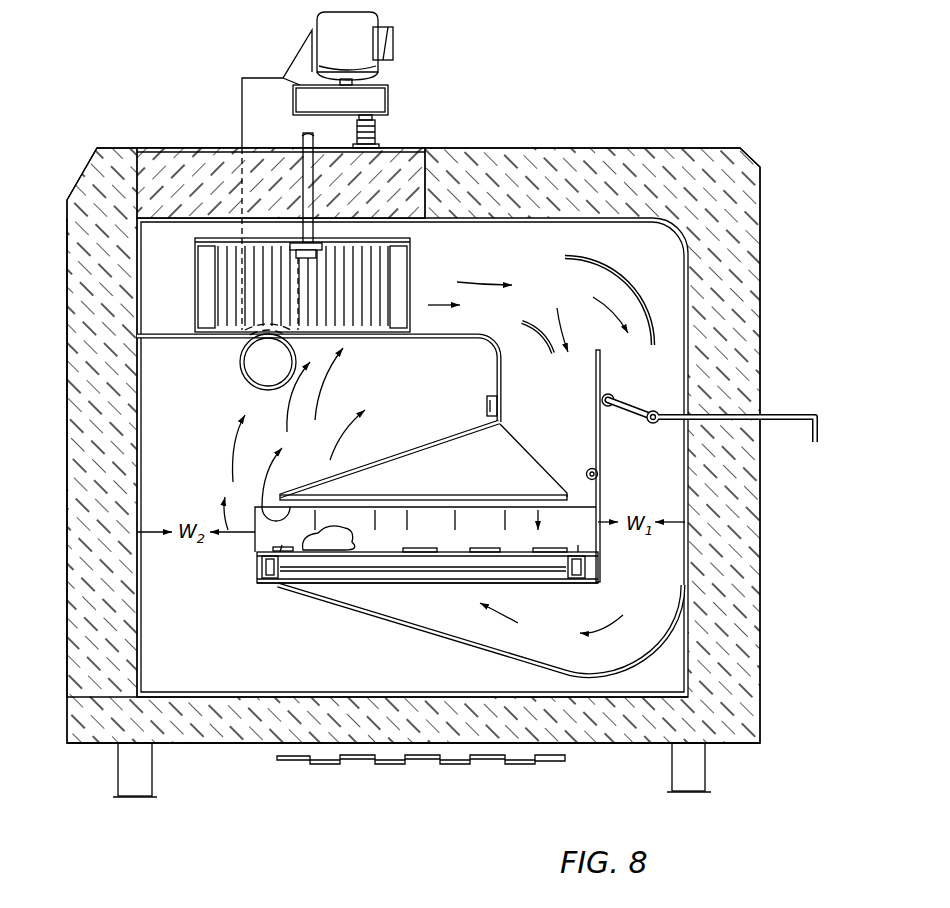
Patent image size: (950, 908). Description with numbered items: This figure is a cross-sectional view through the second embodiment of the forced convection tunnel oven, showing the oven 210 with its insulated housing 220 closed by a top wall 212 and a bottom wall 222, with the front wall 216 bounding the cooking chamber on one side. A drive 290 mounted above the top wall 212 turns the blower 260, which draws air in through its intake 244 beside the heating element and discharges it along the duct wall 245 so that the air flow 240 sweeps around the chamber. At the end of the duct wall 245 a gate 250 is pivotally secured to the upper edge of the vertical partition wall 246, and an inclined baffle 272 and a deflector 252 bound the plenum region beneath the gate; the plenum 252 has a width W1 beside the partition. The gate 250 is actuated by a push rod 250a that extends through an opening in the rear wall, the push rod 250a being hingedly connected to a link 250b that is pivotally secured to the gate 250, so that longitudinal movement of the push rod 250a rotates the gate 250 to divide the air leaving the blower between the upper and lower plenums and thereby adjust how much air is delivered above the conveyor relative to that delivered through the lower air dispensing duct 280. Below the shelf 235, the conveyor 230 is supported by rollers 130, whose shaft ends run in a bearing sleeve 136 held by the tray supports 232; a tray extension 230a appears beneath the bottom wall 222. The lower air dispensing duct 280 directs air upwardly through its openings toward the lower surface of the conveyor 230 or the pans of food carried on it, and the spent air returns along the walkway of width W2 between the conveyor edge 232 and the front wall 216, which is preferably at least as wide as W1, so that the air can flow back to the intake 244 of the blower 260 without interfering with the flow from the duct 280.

The oven 210 is at (472, 105).
The top wall / lid 212 is at (512, 145).
The insulated housing 220 is at (572, 168).
The front wall 216 is at (137, 392).
The bottom wall 222 is at (640, 730).
The fan drive motor assembly 290 is at (253, 100).
The blower 260 is at (208, 272).
The intake 244 is at (232, 340).
The duct wall 245 is at (500, 352).
The air flow 240 is at (514, 266).
The inclined baffle 272 is at (523, 446).
The plenum 252 is at (576, 445).
The gate 250 is at (596, 386).
The push rod 250a is at (675, 408).
The link 250b is at (670, 454).
The vertical partition wall 246 is at (598, 495).
The shelf 235 is at (330, 540).
The conveyor 230 is at (450, 552).
The edge of the conveyor 232 is at (282, 545).
The bearing sleeve 136 is at (270, 562).
The roller 130 is at (528, 588).
The lower air dispensing duct 280 is at (353, 594).
The tray extension 230a is at (372, 764).